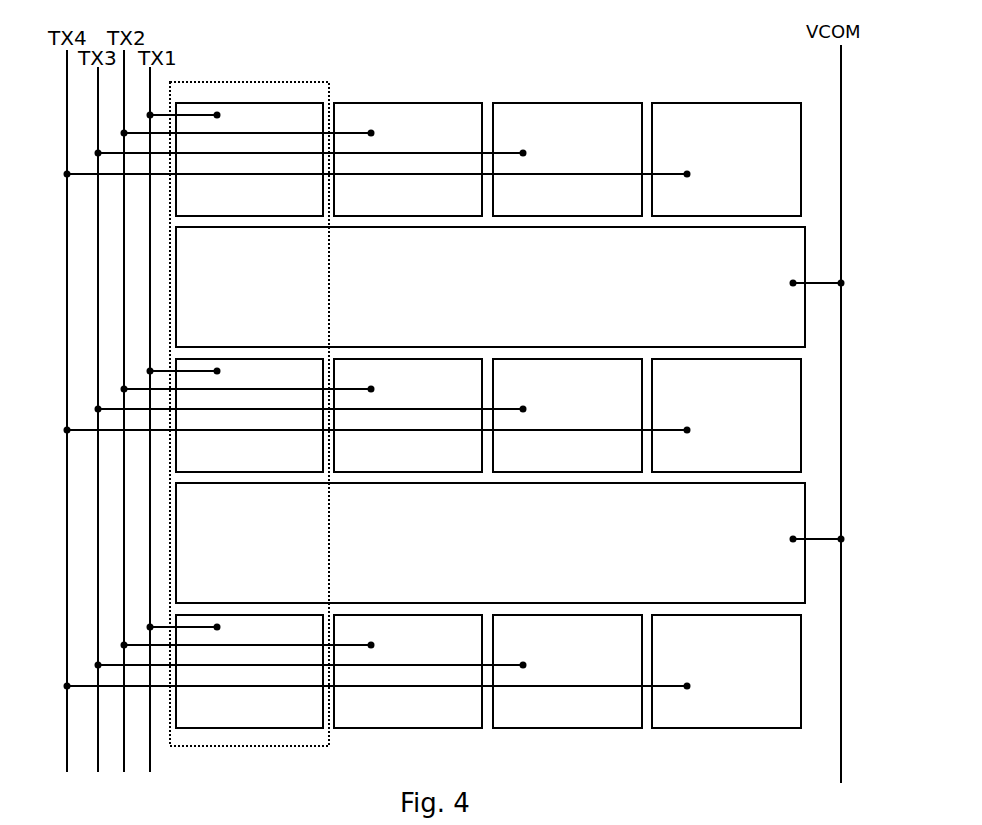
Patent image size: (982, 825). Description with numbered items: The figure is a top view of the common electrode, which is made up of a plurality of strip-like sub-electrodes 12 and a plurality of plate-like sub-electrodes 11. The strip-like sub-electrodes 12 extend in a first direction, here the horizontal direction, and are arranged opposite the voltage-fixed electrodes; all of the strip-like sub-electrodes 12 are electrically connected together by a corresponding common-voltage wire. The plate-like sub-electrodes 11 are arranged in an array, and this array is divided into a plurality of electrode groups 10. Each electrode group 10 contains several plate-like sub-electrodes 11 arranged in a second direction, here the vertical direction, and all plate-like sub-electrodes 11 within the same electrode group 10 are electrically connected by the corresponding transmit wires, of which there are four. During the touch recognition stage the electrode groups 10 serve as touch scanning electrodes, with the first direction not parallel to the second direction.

The electrode group 10 is at (293, 82).
The plate-like sub-electrode 11 is at (700, 103).
The strip-like sub-electrode 12 is at (807, 247).